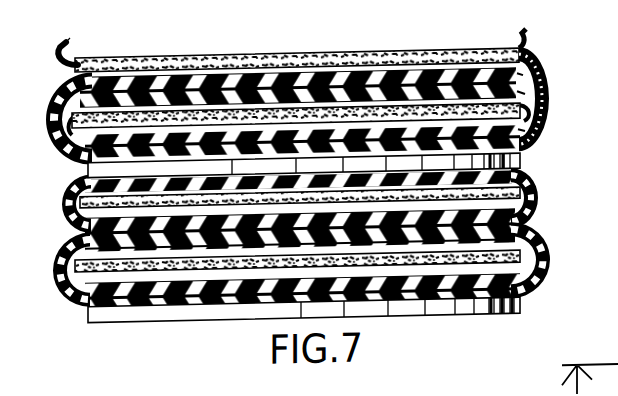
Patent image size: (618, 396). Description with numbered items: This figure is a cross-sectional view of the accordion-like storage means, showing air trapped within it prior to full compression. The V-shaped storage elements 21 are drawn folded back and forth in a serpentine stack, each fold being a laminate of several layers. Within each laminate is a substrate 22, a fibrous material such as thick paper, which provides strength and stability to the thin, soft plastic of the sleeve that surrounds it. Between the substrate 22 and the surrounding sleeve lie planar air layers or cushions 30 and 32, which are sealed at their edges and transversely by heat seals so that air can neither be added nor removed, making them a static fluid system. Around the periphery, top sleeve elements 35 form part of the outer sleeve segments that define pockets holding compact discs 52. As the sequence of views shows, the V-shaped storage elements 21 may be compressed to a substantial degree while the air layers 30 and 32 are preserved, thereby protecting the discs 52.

The V-shaped storage element 21 is at (50, 272).
The substrate 22 is at (388, 57).
The planar air layer/cushion 30 is at (275, 107).
The planar air layer/cushion 32 is at (68, 128).
The top sleeve element 35 is at (527, 109).
The compact disc 52 is at (80, 167).